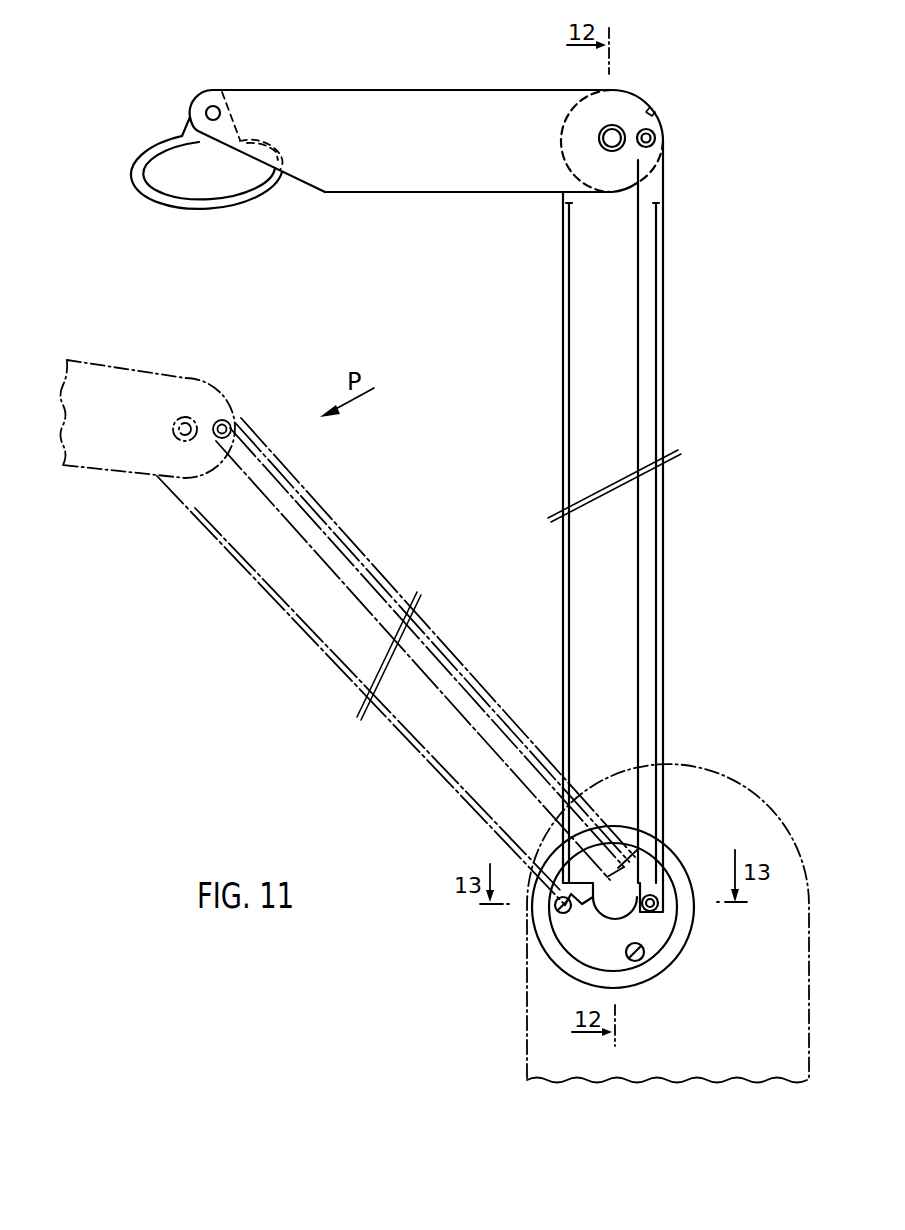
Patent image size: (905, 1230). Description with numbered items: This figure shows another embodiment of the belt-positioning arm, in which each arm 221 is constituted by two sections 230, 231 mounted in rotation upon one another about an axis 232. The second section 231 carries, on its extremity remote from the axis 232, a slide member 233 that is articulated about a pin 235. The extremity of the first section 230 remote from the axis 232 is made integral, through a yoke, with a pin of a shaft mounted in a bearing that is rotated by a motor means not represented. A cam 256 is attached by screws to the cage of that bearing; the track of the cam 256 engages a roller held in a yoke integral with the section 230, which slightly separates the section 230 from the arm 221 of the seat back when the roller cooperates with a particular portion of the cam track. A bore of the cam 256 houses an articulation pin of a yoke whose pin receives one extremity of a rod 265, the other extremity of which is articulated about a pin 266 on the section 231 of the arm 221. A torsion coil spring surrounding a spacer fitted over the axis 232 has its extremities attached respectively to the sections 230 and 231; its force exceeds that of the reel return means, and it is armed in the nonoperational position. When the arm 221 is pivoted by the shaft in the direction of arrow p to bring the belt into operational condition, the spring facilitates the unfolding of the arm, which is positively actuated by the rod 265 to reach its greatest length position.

The section 231 is at (372, 105).
The pin 235 is at (216, 105).
The slide member 233 is at (206, 182).
The axis 232 is at (612, 138).
The pin 266 is at (653, 140).
The section 230 is at (626, 530).
The arm 221 is at (550, 371).
The rod 265 is at (645, 522).
The cam 256 is at (580, 935).